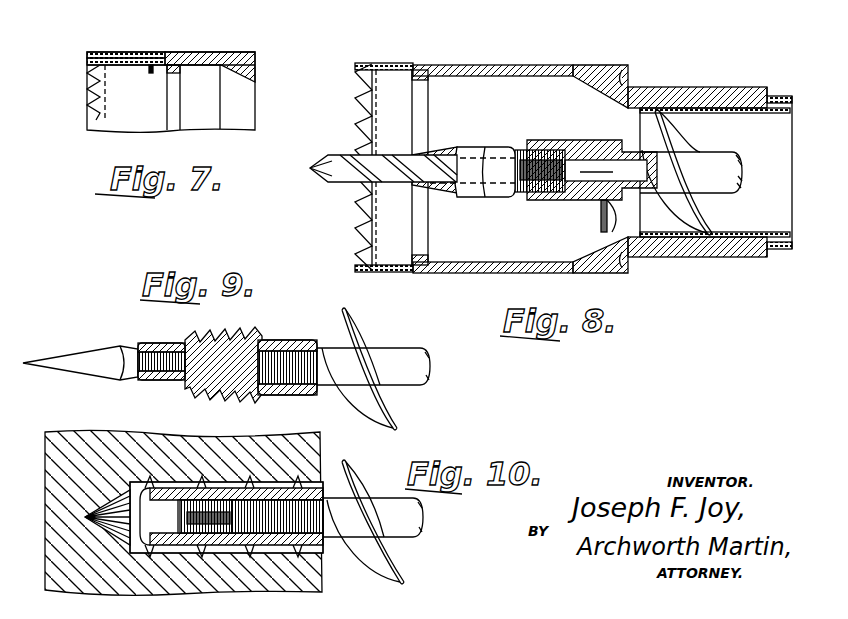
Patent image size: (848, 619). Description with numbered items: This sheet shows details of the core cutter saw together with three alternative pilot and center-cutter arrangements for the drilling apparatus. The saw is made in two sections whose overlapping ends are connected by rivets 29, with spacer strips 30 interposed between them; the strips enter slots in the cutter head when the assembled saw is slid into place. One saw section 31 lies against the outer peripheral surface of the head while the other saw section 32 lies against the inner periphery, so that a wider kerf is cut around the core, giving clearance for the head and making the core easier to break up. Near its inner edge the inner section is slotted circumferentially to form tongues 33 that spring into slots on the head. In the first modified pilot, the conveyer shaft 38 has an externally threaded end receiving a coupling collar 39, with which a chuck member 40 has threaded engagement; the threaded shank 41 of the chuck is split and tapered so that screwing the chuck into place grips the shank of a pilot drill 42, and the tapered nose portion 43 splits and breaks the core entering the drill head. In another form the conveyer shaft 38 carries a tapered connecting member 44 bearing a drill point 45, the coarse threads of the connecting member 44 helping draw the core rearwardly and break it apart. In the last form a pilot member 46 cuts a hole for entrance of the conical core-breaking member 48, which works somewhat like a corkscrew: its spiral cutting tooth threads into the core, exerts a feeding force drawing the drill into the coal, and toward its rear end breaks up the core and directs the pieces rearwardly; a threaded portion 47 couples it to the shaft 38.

In FIG. 7, the rivets 29 is at (118, 56).
In FIG. 7, the spacer strips 30 is at (146, 55).
In FIG. 7, the saw section 31 is at (96, 63).
In FIG. 7, the saw section 32 is at (108, 70).
In FIG. 7, the tongues 33 is at (160, 69).
In FIG. 8, the conveyer shaft 38 is at (728, 155).
In FIG. 9, the conveyer shaft 38 is at (400, 352).
In FIG. 10, the conveyer shaft 38 is at (408, 517).
In FIG. 8, the coupling collar 39 is at (594, 141).
In FIG. 8, the chuck member 40 is at (495, 143).
In FIG. 8, the threaded shank 41 is at (542, 142).
In FIG. 8, the pilot drill 42 is at (317, 157).
In FIG. 8, the nose portion 43 is at (437, 152).
In FIG. 9, the connecting member 44 is at (242, 333).
In FIG. 9, the drill point 45 is at (85, 350).
In FIG. 10, the pilot member 46 is at (122, 485).
In FIG. 10, the threaded portion 47 is at (208, 490).
In FIG. 10, the core-breaking member 48 is at (247, 483).